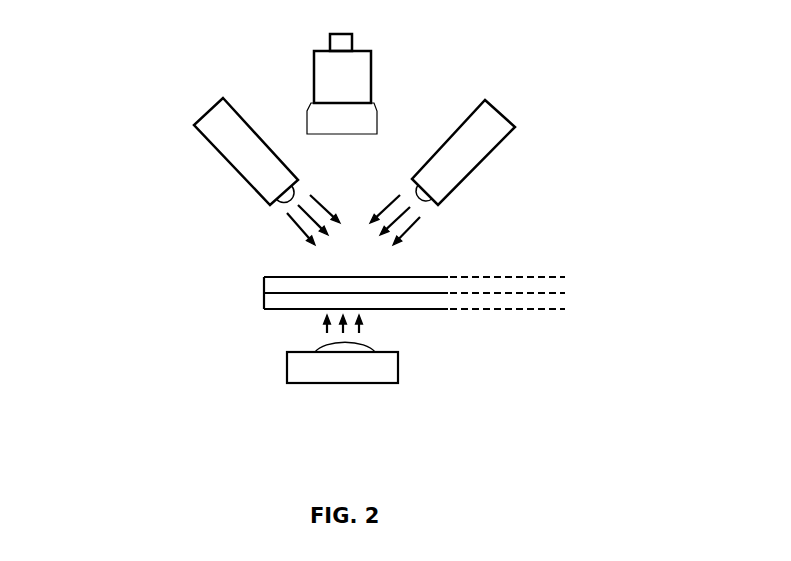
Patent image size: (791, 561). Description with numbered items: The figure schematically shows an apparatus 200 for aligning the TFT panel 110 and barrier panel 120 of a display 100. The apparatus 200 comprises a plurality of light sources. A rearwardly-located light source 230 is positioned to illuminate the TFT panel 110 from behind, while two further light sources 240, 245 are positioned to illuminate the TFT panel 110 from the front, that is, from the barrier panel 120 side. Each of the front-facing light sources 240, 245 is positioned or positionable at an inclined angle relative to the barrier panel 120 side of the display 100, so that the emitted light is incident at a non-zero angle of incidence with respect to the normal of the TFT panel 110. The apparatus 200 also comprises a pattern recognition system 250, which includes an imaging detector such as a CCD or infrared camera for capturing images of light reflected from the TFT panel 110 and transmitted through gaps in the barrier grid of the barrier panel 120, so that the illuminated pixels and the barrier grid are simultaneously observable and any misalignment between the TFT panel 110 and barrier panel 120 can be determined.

The apparatus 200 is at (116, 82).
The pattern recognition system 250 is at (371, 85).
The light source 240 is at (233, 166).
The light source 245 is at (470, 176).
The display 100 is at (359, 295).
The TFT panel 110 is at (263, 301).
The barrier panel 120 is at (264, 283).
The light source 230 is at (312, 383).